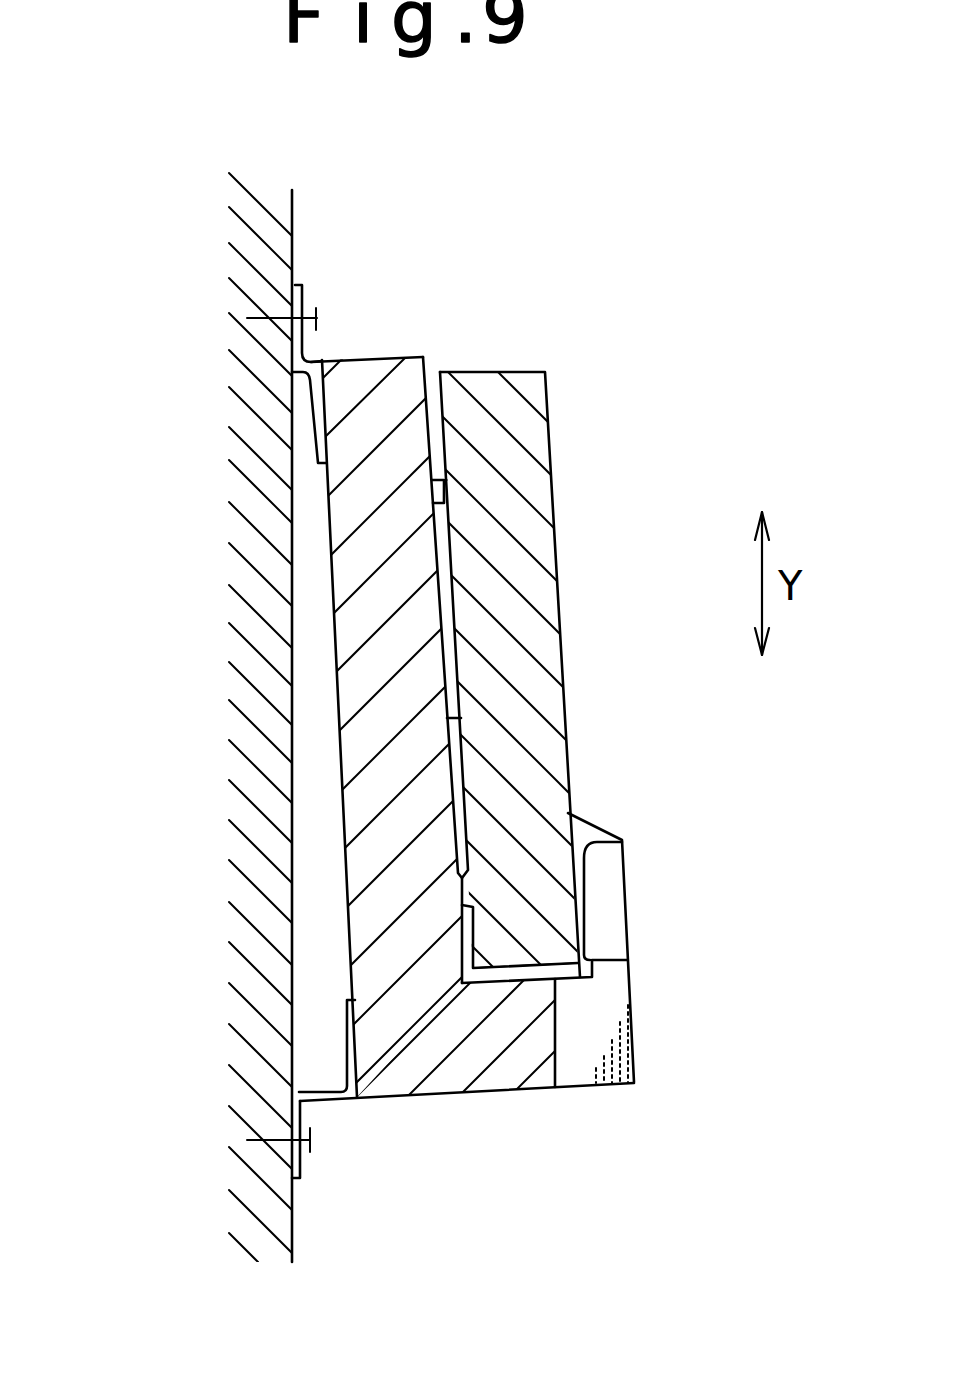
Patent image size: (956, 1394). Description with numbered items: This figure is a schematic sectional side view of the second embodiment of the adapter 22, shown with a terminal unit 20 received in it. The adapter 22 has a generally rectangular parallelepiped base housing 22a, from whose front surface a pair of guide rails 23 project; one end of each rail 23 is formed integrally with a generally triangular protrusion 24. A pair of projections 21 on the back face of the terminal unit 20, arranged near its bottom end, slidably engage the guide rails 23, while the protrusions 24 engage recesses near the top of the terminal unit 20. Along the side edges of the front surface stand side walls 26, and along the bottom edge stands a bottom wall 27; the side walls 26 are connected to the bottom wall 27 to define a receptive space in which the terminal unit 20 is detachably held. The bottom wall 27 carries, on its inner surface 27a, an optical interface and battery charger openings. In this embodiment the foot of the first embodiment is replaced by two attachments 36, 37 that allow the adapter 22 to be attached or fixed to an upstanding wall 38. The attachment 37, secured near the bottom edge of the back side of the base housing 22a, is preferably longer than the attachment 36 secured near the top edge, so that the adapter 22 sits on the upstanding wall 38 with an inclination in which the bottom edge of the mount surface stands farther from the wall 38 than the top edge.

The terminal unit 20 is at (557, 612).
The projections 21 is at (466, 903).
The adapter 22 is at (401, 348).
The base housing 22a is at (352, 618).
The guide rails 23 is at (280, 680).
The protrusion 24 is at (278, 533).
The side wall 26 is at (608, 872).
The bottom wall 27 is at (513, 1017).
The inner surface of the bottom wall 27a is at (581, 815).
The attachment 36 is at (316, 436).
The attachment 37 is at (338, 1116).
The upstanding wall 38 is at (263, 717).